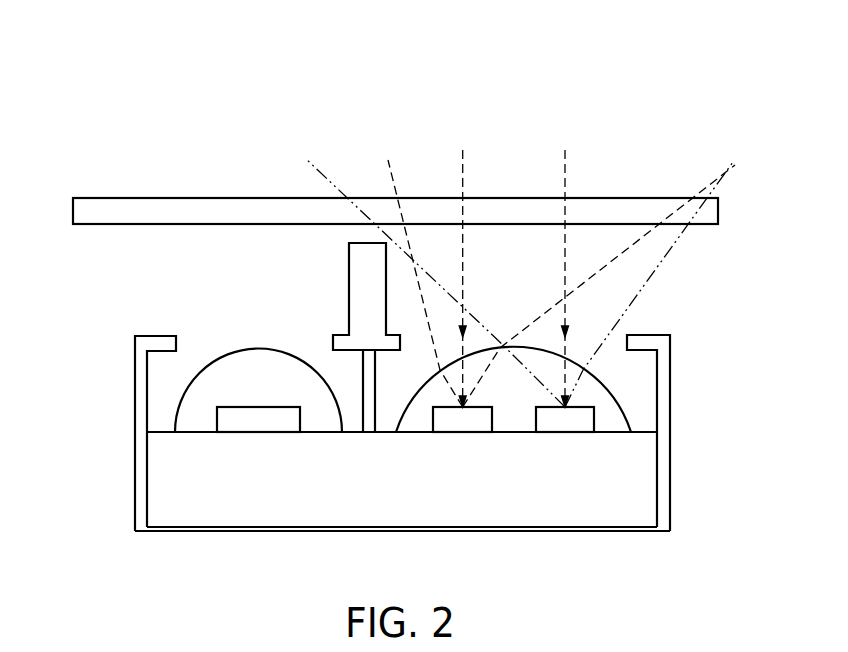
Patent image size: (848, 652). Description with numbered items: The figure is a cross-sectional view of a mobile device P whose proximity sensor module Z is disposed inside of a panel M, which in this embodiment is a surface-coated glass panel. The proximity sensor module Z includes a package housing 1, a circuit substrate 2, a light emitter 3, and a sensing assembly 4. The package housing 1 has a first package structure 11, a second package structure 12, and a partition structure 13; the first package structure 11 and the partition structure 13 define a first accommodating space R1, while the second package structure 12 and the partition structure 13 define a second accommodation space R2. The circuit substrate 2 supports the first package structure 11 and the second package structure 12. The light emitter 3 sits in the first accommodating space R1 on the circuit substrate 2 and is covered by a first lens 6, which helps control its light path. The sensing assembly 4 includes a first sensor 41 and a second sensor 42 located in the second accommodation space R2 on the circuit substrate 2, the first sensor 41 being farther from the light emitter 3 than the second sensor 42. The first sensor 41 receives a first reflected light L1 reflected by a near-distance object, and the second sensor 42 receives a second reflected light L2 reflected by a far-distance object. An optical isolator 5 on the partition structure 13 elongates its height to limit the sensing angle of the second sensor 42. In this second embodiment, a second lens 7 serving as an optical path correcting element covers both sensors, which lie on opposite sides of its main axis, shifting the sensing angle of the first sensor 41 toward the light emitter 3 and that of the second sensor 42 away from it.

The package housing 1 is at (97, 42).
The first package structure 11 is at (147, 408).
The second package structure 12 is at (657, 413).
The partition structure 13 is at (368, 397).
The circuit substrate 2 is at (668, 486).
The light emitter 3 is at (242, 397).
The sensing assembly 4 is at (515, 461).
The first sensor 41 is at (580, 423).
The second sensor 42 is at (463, 423).
The optical isolator 5 is at (339, 268).
The first lens 6 is at (300, 348).
The second lens 7 is at (428, 364).
The panel M is at (199, 188).
The optical sensor package P is at (718, 55).
The first reflected light L1 is at (563, 264).
The second reflected light L2 is at (463, 264).
The first accommodating space R1 is at (190, 352).
The second accommodation space R2 is at (642, 383).
The proximity sensor module Z is at (673, 308).